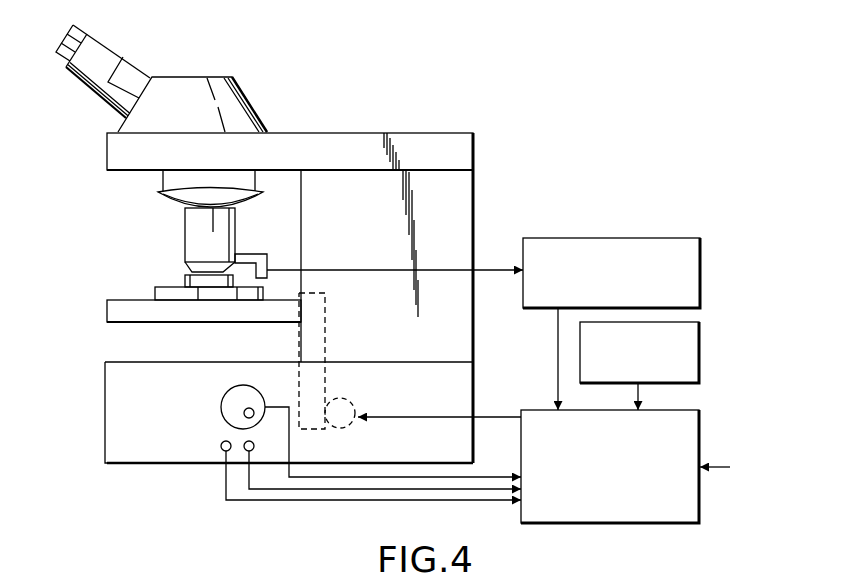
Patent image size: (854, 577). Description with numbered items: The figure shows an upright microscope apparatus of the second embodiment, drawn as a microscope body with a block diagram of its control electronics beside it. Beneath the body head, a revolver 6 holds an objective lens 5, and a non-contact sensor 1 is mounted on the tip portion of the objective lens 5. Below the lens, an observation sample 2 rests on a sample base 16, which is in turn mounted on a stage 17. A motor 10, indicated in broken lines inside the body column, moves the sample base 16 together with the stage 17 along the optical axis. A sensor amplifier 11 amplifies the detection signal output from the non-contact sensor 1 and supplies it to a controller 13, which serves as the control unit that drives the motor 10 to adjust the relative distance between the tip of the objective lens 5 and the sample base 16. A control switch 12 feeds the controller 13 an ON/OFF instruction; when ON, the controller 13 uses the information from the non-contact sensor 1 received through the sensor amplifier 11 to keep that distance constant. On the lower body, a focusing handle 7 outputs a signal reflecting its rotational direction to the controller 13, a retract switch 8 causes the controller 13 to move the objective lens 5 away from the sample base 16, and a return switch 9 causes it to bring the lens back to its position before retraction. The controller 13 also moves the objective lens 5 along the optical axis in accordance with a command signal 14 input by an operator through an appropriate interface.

The non-contact sensor 1 is at (270, 268).
The observation sample 2 is at (190, 283).
The objective lens 5 is at (192, 222).
The revolver 6 is at (180, 196).
The focusing handle 7 is at (221, 407).
The retract switch 8 is at (221, 446).
The return switch 9 is at (255, 446).
The motor 10 is at (352, 401).
The sensor amplifier 11 is at (701, 273).
The control switch 12 is at (700, 352).
The controller 13 is at (699, 505).
The command signal 14 is at (770, 479).
The sample base 16 is at (156, 296).
The stage 17 is at (118, 312).